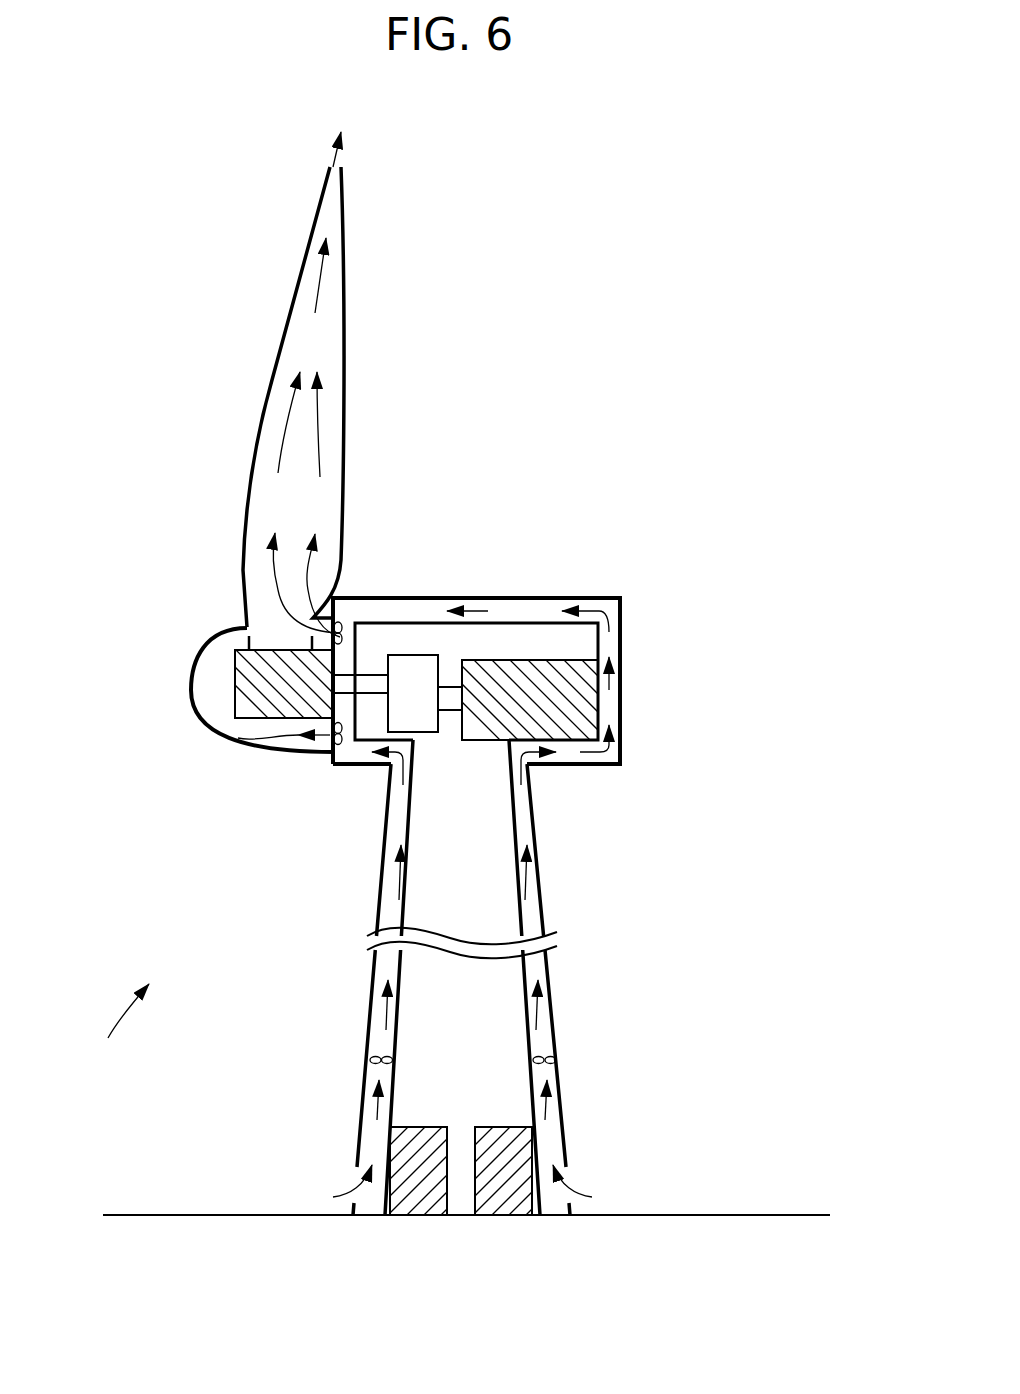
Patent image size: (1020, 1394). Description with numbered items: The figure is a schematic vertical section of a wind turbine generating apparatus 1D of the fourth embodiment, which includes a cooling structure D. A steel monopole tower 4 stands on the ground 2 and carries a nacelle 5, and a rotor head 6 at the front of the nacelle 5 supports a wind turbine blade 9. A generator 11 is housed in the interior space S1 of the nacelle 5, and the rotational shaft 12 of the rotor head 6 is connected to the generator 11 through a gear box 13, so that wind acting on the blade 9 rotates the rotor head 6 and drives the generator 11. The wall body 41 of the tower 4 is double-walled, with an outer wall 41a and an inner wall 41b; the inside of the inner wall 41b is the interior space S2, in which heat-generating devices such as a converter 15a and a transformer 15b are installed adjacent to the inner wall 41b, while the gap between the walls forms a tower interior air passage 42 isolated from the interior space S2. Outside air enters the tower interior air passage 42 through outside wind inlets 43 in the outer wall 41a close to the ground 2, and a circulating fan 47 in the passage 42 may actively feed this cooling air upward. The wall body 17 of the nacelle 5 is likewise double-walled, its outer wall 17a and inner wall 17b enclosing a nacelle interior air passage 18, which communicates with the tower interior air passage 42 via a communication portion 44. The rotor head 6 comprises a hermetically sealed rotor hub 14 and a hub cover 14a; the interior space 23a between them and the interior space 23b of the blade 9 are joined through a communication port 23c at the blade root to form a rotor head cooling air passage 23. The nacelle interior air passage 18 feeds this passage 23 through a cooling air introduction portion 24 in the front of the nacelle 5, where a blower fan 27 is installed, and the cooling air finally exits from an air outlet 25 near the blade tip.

The wind turbine generating apparatus 1D is at (596, 318).
The ground 2 is at (147, 1213).
The tower 4 is at (384, 893).
The nacelle 5 is at (483, 596).
The rotor head 6 is at (76, 643).
The wind turbine blade 9 is at (283, 340).
The generator 11 is at (582, 715).
The rotational shaft 12 is at (375, 697).
The gear box 13 is at (425, 722).
The rotor hub 14 is at (233, 697).
The hub cover 14a is at (257, 640).
The converter 15a is at (420, 1125).
The transformer 15b is at (495, 1125).
The wall body 17 is at (717, 590).
The outer wall 17a is at (624, 619).
The inner wall 17b is at (600, 640).
The nacelle interior air passage 18 is at (609, 700).
The rotor head cooling air passage 23 is at (128, 432).
The interior space 23a is at (225, 668).
The interior space 23b is at (265, 472).
The communication port 23c is at (300, 622).
The cooling air introduction portion 24 is at (338, 618).
The air outlet 25 is at (343, 160).
The blower fan 27 is at (346, 634).
The wall body 41 is at (654, 835).
The outer wall 41a is at (538, 835).
The inner wall 41b is at (530, 908).
The tower interior air passage 42 is at (385, 968).
The outside wind inlet 43 is at (358, 1178).
The communication portion 44 is at (402, 790).
The circulating fan 47 is at (370, 1058).
The cooling structure D is at (120, 1028).
The interior space S1 is at (476, 655).
The interior space S2 is at (476, 895).